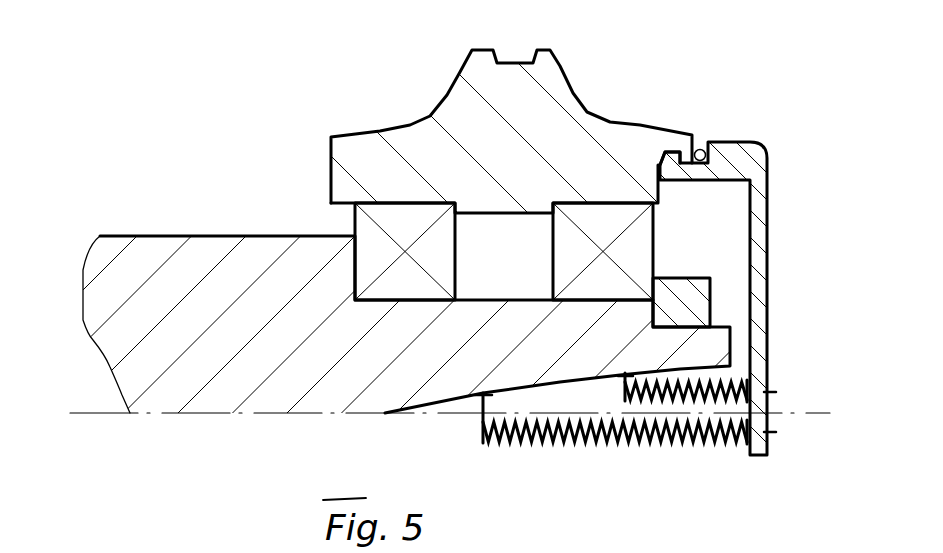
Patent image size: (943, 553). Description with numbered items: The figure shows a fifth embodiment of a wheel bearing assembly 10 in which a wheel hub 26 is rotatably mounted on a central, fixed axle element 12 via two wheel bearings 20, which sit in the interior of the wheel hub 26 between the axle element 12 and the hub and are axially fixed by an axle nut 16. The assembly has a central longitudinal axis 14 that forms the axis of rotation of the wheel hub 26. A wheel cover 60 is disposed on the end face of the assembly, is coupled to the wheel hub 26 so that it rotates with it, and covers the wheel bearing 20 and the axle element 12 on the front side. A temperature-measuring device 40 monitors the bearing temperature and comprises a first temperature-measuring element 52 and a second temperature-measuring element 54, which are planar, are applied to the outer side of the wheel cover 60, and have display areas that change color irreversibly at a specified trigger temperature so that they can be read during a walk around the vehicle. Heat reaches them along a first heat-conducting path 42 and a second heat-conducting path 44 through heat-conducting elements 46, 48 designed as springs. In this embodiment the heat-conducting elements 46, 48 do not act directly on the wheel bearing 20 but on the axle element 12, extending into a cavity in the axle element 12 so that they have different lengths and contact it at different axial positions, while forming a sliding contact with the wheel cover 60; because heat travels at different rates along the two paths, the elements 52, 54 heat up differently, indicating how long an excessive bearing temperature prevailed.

The wheel bearing assembly 10 is at (249, 71).
The axle element 12 is at (213, 393).
The longitudinal axis 14 is at (312, 417).
The axle nut 16 is at (687, 302).
The wheel bearing 20 is at (390, 225).
The wheel hub 26 is at (360, 165).
The temperature-measuring device 40 is at (650, 422).
The first heat-conducting path 42 is at (722, 380).
The second heat-conducting path 44 is at (572, 443).
The heat-conducting element 46 is at (718, 379).
The heat-conducting element 48 is at (611, 448).
The first temperature-measuring element 52 is at (776, 392).
The second temperature-measuring element 54 is at (776, 432).
The wheel cover 60 is at (760, 233).